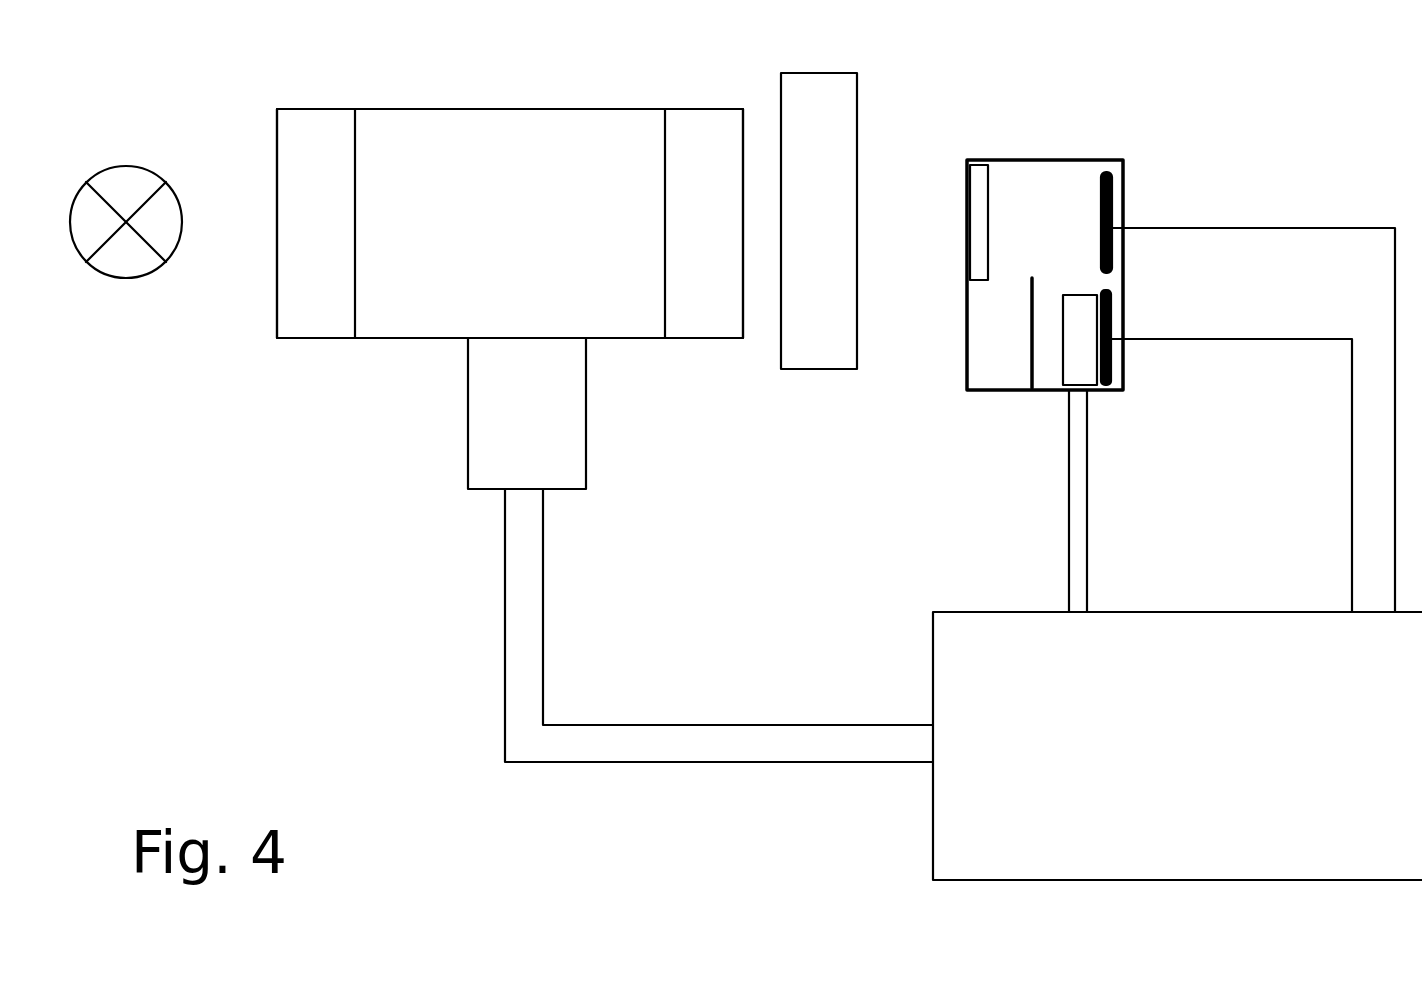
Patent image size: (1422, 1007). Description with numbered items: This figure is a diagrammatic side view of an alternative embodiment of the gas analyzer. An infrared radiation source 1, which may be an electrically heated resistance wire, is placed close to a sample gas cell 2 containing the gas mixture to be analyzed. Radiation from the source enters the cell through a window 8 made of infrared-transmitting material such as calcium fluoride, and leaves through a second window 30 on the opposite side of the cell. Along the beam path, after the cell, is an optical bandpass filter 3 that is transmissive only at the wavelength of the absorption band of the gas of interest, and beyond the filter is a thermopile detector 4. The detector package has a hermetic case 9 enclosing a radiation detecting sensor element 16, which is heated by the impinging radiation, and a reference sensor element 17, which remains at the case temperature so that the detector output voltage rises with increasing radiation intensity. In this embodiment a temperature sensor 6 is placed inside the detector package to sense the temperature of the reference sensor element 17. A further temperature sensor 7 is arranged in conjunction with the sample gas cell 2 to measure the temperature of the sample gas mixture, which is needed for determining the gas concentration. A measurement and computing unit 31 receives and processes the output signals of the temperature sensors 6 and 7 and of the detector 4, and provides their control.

The infrared radiation source 1 is at (136, 166).
The sample gas cell 2 is at (545, 109).
The optical bandpass filter 3 is at (830, 370).
The thermopile detector 4 is at (1083, 250).
The temperature sensor 6 is at (1063, 370).
The temperature sensor 7 is at (468, 488).
The window 8 is at (333, 109).
The hermetic case 9 is at (1127, 173).
The radiation detecting sensor element 16 is at (1112, 205).
The reference sensor element 17 is at (1110, 362).
The window 30 is at (732, 110).
The measurement and computing unit 31 is at (933, 658).